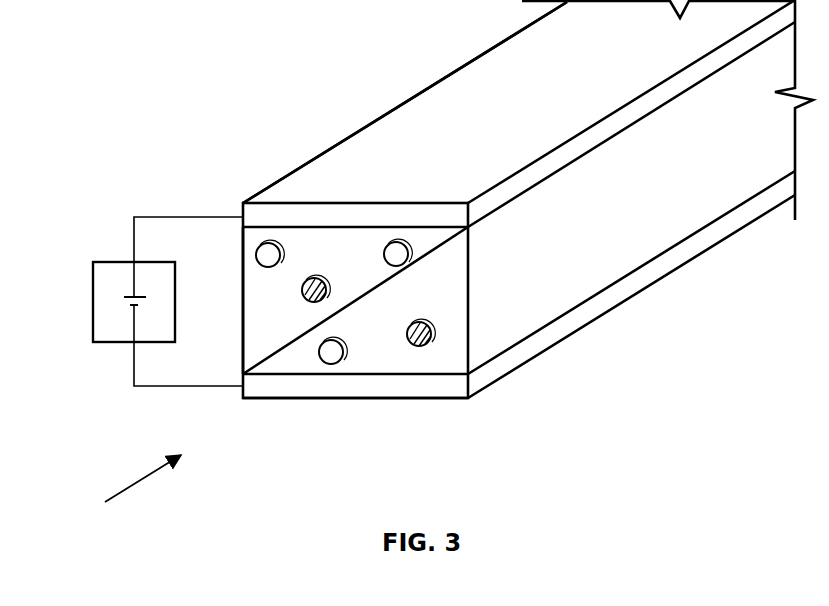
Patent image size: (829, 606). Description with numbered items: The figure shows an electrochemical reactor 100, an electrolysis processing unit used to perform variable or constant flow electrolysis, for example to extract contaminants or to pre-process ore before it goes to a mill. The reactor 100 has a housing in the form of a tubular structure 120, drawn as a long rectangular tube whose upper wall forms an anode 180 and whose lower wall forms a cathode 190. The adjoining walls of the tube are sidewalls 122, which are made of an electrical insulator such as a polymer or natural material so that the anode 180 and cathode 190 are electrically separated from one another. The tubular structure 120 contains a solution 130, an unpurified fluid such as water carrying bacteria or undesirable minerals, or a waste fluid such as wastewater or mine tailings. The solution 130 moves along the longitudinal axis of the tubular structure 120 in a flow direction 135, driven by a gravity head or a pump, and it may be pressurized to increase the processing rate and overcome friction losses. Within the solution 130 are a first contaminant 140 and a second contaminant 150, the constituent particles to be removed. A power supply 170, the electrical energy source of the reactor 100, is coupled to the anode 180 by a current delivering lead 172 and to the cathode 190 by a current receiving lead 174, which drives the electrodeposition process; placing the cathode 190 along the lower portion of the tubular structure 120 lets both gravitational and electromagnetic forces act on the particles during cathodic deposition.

The electrochemical reactor 100 is at (150, 32).
The tubular structure 120 is at (547, 404).
The sidewalls 122 is at (258, 291).
The solution 130 is at (450, 287).
The flow direction 135 is at (148, 478).
The first contaminant 140 is at (318, 278).
The second contaminant 150 is at (263, 258).
The power supply 170 is at (115, 262).
The current delivering lead 172 is at (188, 214).
The current receiving lead 174 is at (185, 375).
The anode 180 is at (368, 138).
The cathode 190 is at (283, 388).